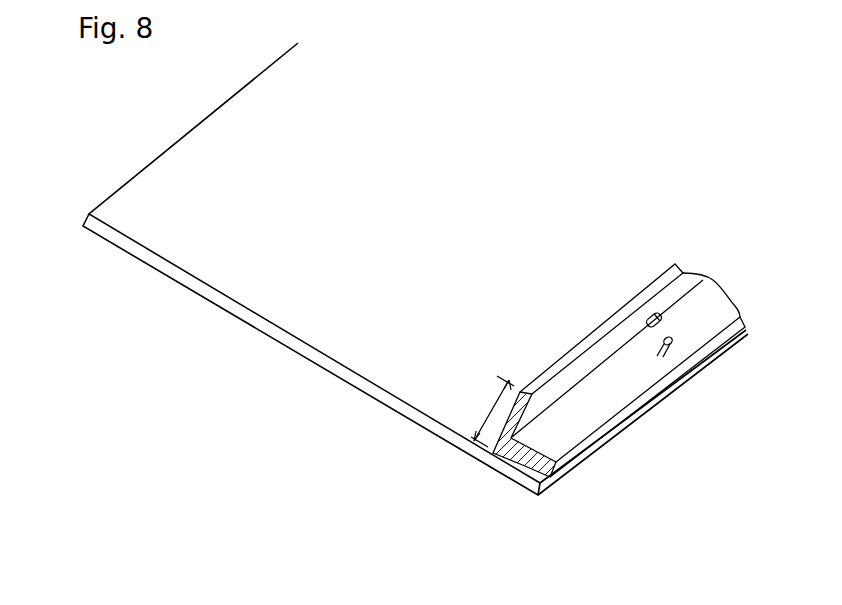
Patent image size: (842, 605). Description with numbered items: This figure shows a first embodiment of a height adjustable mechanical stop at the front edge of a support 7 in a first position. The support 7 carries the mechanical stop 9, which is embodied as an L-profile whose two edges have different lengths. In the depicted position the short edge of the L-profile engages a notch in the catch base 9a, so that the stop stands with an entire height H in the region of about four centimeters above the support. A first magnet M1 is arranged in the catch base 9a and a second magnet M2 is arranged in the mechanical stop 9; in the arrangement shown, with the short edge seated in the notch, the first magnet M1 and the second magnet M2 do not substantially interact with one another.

The support 7 is at (336, 226).
The mechanical stop 9 is at (555, 370).
The catch base 9a is at (573, 430).
The first magnet M1 is at (676, 343).
The second magnet M2 is at (648, 313).
The entire height H is at (489, 411).